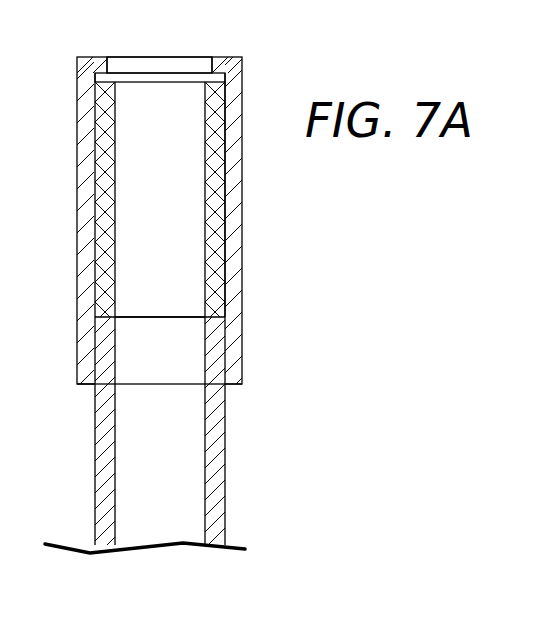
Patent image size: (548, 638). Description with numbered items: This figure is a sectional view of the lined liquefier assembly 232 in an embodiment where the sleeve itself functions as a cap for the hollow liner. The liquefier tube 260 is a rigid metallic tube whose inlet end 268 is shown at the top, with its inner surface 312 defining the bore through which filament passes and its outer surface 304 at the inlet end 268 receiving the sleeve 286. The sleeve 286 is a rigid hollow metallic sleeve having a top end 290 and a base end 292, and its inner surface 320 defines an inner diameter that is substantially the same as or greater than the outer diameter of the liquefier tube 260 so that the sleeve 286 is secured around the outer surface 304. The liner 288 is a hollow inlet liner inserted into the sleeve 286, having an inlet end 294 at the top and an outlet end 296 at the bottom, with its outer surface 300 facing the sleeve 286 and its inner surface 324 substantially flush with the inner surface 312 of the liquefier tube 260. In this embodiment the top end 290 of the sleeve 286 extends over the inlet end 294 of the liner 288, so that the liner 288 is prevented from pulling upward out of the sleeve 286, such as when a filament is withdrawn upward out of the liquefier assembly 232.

The liquefier assembly 232 is at (362, 263).
The liquefier tube 260 is at (95, 437).
The inlet end 268 is at (136, 311).
The sleeve 286 is at (75, 187).
The liner 288 is at (229, 248).
The top end 290 is at (112, 53).
The base end 292 is at (227, 391).
The inlet end 294 is at (167, 65).
The outlet end 296 is at (189, 325).
The outer surface 300 is at (226, 143).
The outer surface 304 is at (223, 457).
The inner surface 312 is at (203, 520).
The inner surface 320 is at (222, 94).
The inner surface 324 is at (205, 190).